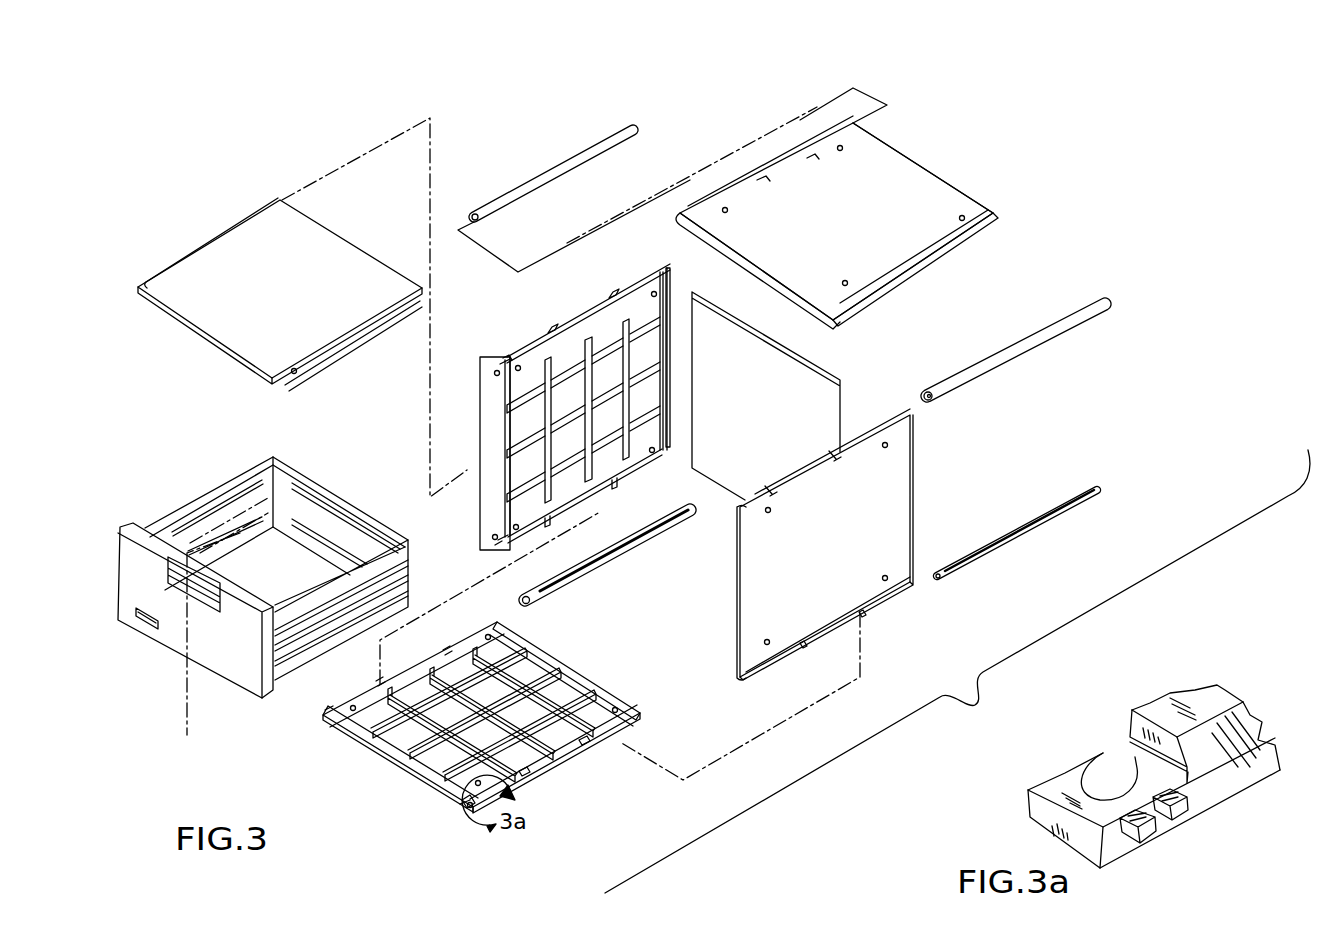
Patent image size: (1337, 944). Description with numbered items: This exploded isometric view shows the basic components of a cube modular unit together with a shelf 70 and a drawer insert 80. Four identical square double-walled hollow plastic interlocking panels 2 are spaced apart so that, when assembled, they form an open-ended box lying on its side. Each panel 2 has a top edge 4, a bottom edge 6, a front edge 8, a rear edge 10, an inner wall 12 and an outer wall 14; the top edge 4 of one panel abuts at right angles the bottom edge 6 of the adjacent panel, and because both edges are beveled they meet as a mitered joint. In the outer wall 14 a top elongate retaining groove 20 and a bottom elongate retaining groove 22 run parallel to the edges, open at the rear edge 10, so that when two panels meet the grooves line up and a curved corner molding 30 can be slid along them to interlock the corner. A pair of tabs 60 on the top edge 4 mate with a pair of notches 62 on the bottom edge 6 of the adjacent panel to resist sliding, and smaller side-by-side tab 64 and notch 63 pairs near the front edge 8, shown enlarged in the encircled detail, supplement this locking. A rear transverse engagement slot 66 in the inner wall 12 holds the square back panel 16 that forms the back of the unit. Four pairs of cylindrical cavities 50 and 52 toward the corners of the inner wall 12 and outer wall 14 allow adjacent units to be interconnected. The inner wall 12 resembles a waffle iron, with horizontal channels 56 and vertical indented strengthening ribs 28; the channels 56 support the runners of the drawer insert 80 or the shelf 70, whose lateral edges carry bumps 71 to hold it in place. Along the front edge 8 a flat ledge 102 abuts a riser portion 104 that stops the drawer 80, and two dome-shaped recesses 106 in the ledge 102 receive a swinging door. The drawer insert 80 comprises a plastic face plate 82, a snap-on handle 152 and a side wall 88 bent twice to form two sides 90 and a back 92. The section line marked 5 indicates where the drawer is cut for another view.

In FIG. 3, the interlocking panel 2 is at (838, 234).
In FIG. 3, the top edge 4 is at (760, 172).
In FIG. 3A, the top edge 4 is at (1257, 752).
In FIG. 3, the section line 5 is at (247, 539).
In FIG. 3, the bottom edge 6 is at (930, 265).
In FIG. 3, the front edge 8 is at (767, 277).
In FIG. 3A, the front edge 8 is at (1038, 820).
In FIG. 3, the rear edge 10 is at (937, 170).
In FIG. 3, the inner wall 12 is at (607, 457).
In FIG. 3A, the inner wall 12 is at (1205, 700).
In FIG. 3, the outer wall 14 is at (898, 627).
In FIG. 3, the back panel 16 is at (737, 424).
In FIG. 3, the top elongate retaining groove 20 is at (855, 125).
In FIG. 3, the bottom elongate retaining groove 22 is at (1002, 213).
In FIG. 3, the strengthening rib 28 is at (548, 365).
In FIG. 3, the corner molding 30 is at (636, 128).
In FIG. 3, the cavity 50 is at (842, 151).
In FIG. 3, the cavity 52 is at (515, 368).
In FIG. 3, the channel 56 is at (507, 409).
In FIG. 3, the tab 60 is at (549, 522).
In FIG. 3, the notch 62 is at (612, 300).
In FIG. 3, the notch 63 is at (505, 360).
In FIG. 3A, the notch 63 is at (1170, 813).
In FIG. 3, the tab 64 is at (485, 581).
In FIG. 3A, the tab 64 is at (1143, 827).
In FIG. 3, the rear transverse engagement slot 66 is at (672, 280).
In FIG. 3, the shelf 70 is at (267, 296).
In FIG. 3, the bump 71 is at (147, 279).
In FIG. 3, the drawer insert 80 is at (200, 478).
In FIG. 3, the face plate 82 is at (205, 651).
In FIG. 3, the side wall 88 is at (333, 490).
In FIG. 3, the side 90 is at (247, 470).
In FIG. 3, the back 92 is at (340, 530).
In FIG. 3, the ledge 102 is at (497, 478).
In FIG. 3A, the ledge 102 is at (1155, 777).
In FIG. 3, the riser portion 104 is at (385, 745).
In FIG. 3A, the riser portion 104 is at (1130, 723).
In FIG. 3, the recess 106 is at (496, 375).
In FIG. 3A, the recess 106 is at (1098, 788).
In FIG. 3, the snap-on handle 152 is at (178, 587).